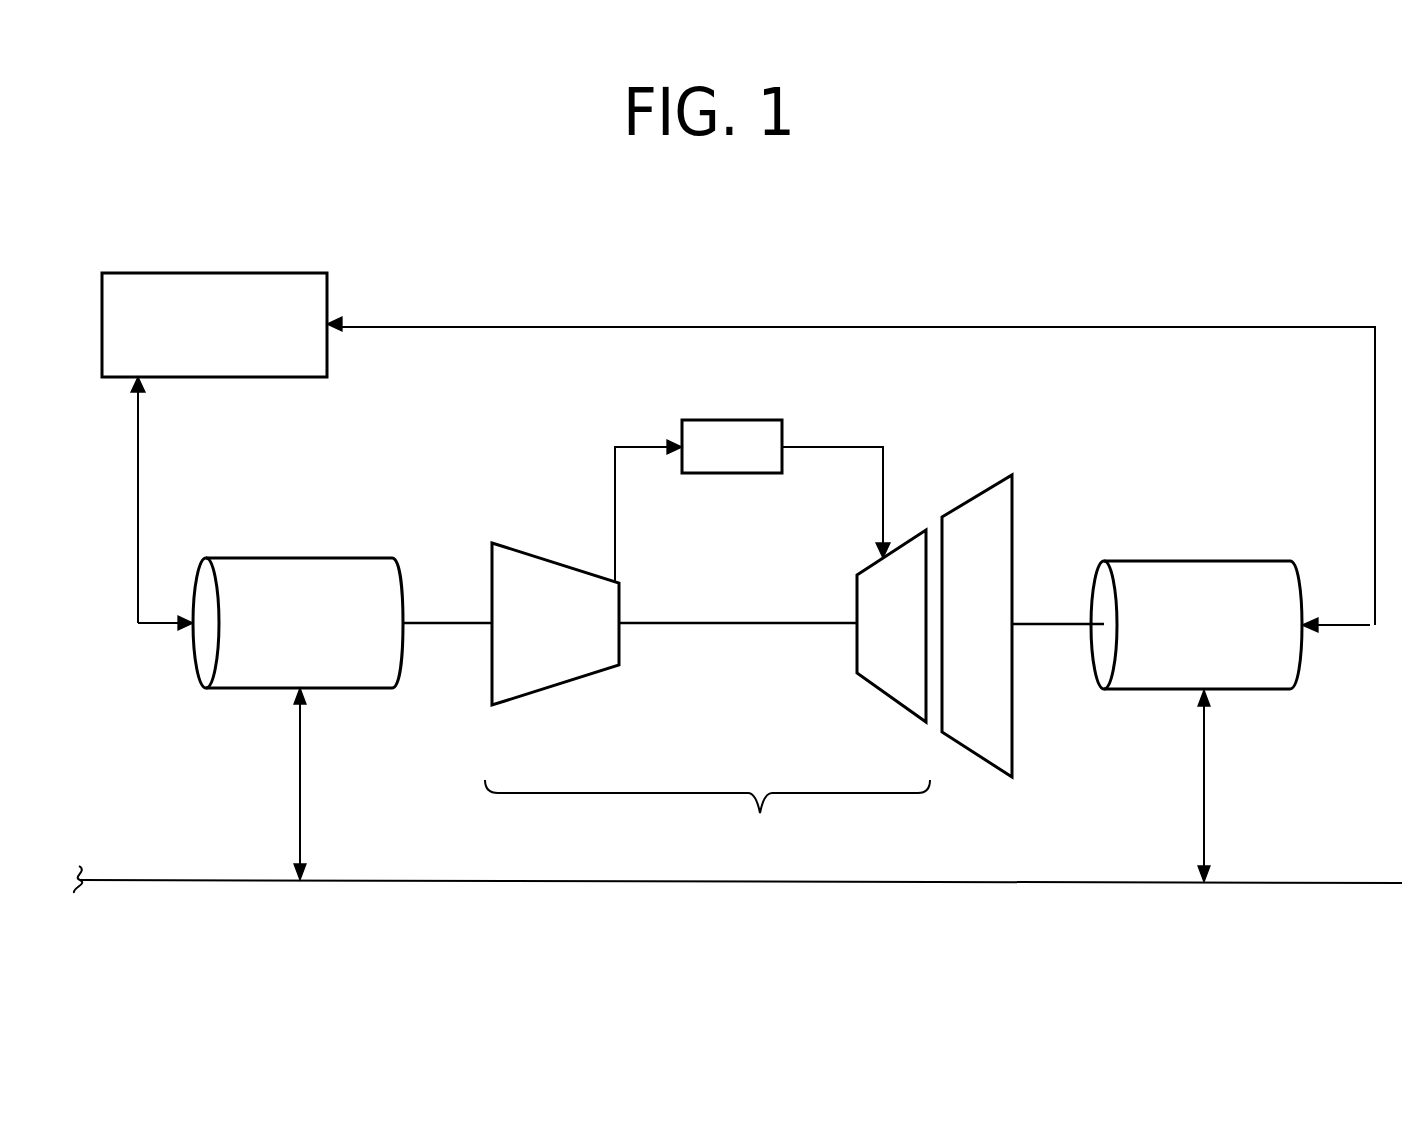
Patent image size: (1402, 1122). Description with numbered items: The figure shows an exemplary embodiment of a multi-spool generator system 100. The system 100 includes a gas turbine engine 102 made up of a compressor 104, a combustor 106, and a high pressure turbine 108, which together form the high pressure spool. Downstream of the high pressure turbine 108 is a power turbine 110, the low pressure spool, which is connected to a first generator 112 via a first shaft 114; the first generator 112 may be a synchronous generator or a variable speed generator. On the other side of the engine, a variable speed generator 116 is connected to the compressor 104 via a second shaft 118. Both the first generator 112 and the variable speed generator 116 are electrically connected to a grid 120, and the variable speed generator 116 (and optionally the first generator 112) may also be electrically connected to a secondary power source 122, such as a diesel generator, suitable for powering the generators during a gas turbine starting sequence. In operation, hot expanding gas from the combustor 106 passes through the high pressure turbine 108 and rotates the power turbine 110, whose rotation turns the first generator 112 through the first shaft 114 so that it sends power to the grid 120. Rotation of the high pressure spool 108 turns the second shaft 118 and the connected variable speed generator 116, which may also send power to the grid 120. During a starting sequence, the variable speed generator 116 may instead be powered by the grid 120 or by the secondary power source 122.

The multi-spool generator system 100 is at (985, 296).
The gas turbine engine 102 is at (707, 820).
The compressor 104 is at (530, 554).
The combustor 106 is at (717, 419).
The high pressure turbine 108 is at (915, 535).
The power turbine 110 is at (1013, 511).
The first generator 112 is at (1275, 560).
The first shaft 114 is at (1055, 621).
The variable speed generator 116 is at (227, 557).
The second shaft 118 is at (435, 620).
The grid 120 is at (1295, 881).
The secondary power source 122 is at (330, 285).